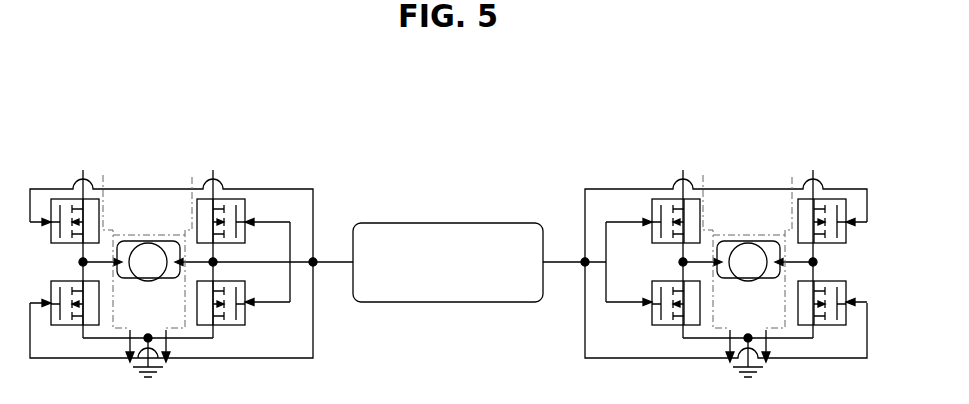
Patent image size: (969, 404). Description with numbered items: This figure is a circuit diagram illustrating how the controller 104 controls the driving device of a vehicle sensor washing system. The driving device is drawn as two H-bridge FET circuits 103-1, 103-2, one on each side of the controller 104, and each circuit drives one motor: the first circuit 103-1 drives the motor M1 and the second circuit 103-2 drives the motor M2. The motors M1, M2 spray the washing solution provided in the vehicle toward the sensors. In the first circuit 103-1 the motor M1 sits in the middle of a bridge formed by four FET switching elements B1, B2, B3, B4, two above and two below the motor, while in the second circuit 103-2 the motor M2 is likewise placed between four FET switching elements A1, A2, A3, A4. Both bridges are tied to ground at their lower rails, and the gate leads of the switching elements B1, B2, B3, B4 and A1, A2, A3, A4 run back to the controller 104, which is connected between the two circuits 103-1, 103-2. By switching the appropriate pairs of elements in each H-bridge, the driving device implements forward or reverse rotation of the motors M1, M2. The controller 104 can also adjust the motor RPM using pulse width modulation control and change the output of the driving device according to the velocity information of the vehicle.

The driving device (first H-bridge FET circuit) 103-1 is at (173, 238).
The driving device (second H-bridge FET circuit) 103-2 is at (724, 238).
The controller 104 is at (515, 223).
The motor M1 is at (148, 242).
The motor M2 is at (748, 242).
The first switching element of first driving circuit B1 is at (94, 218).
The second switching element of first driving circuit B2 is at (239, 306).
The third switching element of first driving circuit B3 is at (239, 218).
The fourth switching element of first driving circuit B4 is at (96, 303).
The first switching element of second driving circuit A1 is at (657, 219).
The second switching element of second driving circuit A2 is at (800, 306).
The third switching element of second driving circuit A3 is at (802, 218).
The fourth switching element of second driving circuit A4 is at (657, 306).